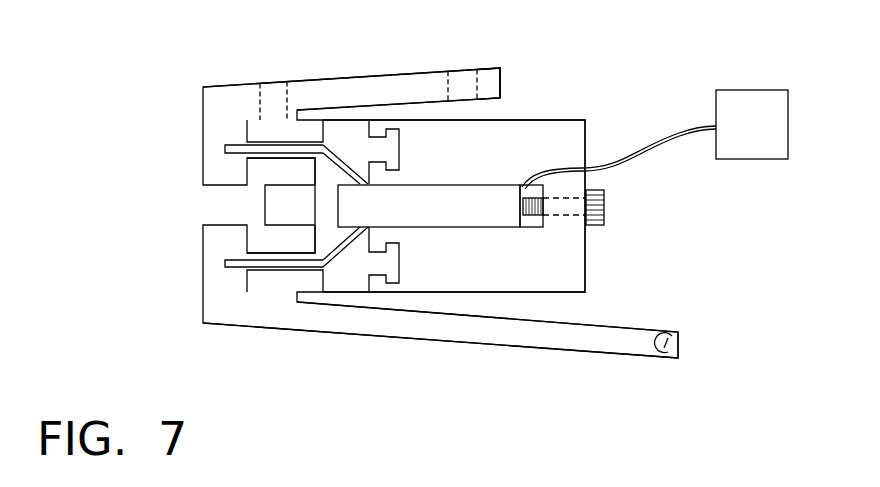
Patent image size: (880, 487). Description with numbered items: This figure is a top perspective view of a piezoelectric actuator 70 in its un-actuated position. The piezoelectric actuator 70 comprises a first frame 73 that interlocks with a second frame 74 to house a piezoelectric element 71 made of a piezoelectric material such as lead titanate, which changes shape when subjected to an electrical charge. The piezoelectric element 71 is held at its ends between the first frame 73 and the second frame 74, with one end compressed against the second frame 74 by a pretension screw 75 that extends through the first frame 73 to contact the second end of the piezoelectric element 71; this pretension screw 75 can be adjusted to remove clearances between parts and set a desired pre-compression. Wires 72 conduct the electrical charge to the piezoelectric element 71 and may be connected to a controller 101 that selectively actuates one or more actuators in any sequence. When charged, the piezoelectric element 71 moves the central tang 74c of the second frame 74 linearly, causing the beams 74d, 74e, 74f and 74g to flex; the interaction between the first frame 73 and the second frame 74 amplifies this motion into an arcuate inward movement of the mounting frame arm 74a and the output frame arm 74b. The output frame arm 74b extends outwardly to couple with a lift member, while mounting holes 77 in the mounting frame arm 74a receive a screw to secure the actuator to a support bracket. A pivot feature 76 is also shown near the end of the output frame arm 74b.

The piezoelectric actuator 70 is at (238, 326).
The piezoelectric element 71 is at (452, 214).
The wires 72 is at (655, 142).
The first frame 73 is at (547, 267).
The second frame 74 is at (340, 82).
The mounting frame arm 74a is at (490, 88).
The output frame arm 74b is at (525, 332).
The central tang 74c is at (313, 214).
The beam 74d is at (267, 138).
The beam 74e is at (262, 160).
The beam 74f is at (274, 253).
The beam 74g is at (277, 272).
The pretension screw 75 is at (598, 203).
The pivot 76 is at (672, 332).
The mounting holes 77 is at (273, 82).
The controller 101 is at (766, 134).